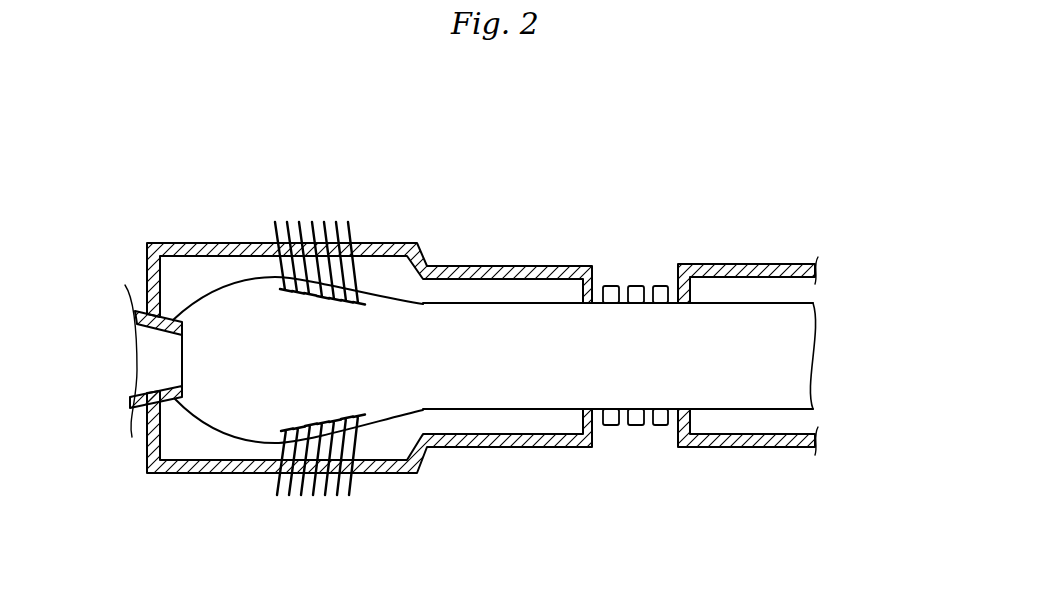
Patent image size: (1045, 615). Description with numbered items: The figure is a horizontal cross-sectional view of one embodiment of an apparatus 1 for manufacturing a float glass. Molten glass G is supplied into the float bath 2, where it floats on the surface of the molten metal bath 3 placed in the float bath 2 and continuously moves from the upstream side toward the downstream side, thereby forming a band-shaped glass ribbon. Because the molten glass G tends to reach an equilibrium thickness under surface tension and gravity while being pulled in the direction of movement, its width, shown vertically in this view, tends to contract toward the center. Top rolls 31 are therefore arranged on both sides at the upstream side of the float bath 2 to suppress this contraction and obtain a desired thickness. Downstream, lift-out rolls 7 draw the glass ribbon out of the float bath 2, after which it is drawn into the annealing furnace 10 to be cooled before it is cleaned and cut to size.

The apparatus for manufacturing a float glass 1 is at (466, 138).
The float bath 2 is at (204, 474).
The molten metal bath 3 is at (192, 278).
The molten glass G is at (253, 302).
The top rolls 31 is at (348, 206).
The lift-out rolls 7 is at (672, 273).
The annealing furnace 10 is at (758, 265).